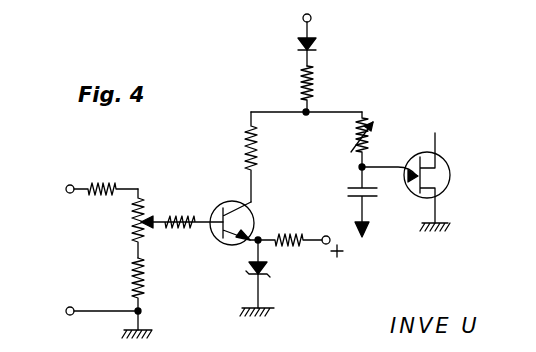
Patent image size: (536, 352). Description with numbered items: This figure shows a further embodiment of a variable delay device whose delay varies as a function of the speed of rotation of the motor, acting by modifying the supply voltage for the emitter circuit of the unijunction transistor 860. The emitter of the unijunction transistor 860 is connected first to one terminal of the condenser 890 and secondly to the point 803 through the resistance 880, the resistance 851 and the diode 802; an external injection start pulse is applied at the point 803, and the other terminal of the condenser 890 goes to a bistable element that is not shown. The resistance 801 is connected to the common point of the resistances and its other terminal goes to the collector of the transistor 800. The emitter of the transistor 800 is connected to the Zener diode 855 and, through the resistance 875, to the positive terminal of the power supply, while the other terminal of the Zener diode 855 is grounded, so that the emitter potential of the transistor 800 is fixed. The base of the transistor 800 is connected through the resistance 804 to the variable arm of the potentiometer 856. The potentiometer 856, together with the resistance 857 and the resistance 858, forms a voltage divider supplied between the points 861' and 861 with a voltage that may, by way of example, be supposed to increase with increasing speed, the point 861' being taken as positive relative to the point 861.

The transistor 800 is at (248, 214).
The resistance 801 is at (249, 142).
The diode 802 is at (296, 45).
The point 803 is at (330, 23).
The resistance 804 is at (190, 216).
The resistance 851 is at (311, 82).
The Zener diode 855 is at (247, 272).
The potentiometer 856 is at (134, 231).
The resistance 857 is at (102, 182).
The resistance 858 is at (134, 268).
The unijunction transistor 860 is at (450, 170).
The point 861 is at (81, 311).
The point 861' is at (49, 188).
The resistance 875 is at (302, 245).
The resistance 880 is at (372, 136).
The condenser 890 is at (352, 182).